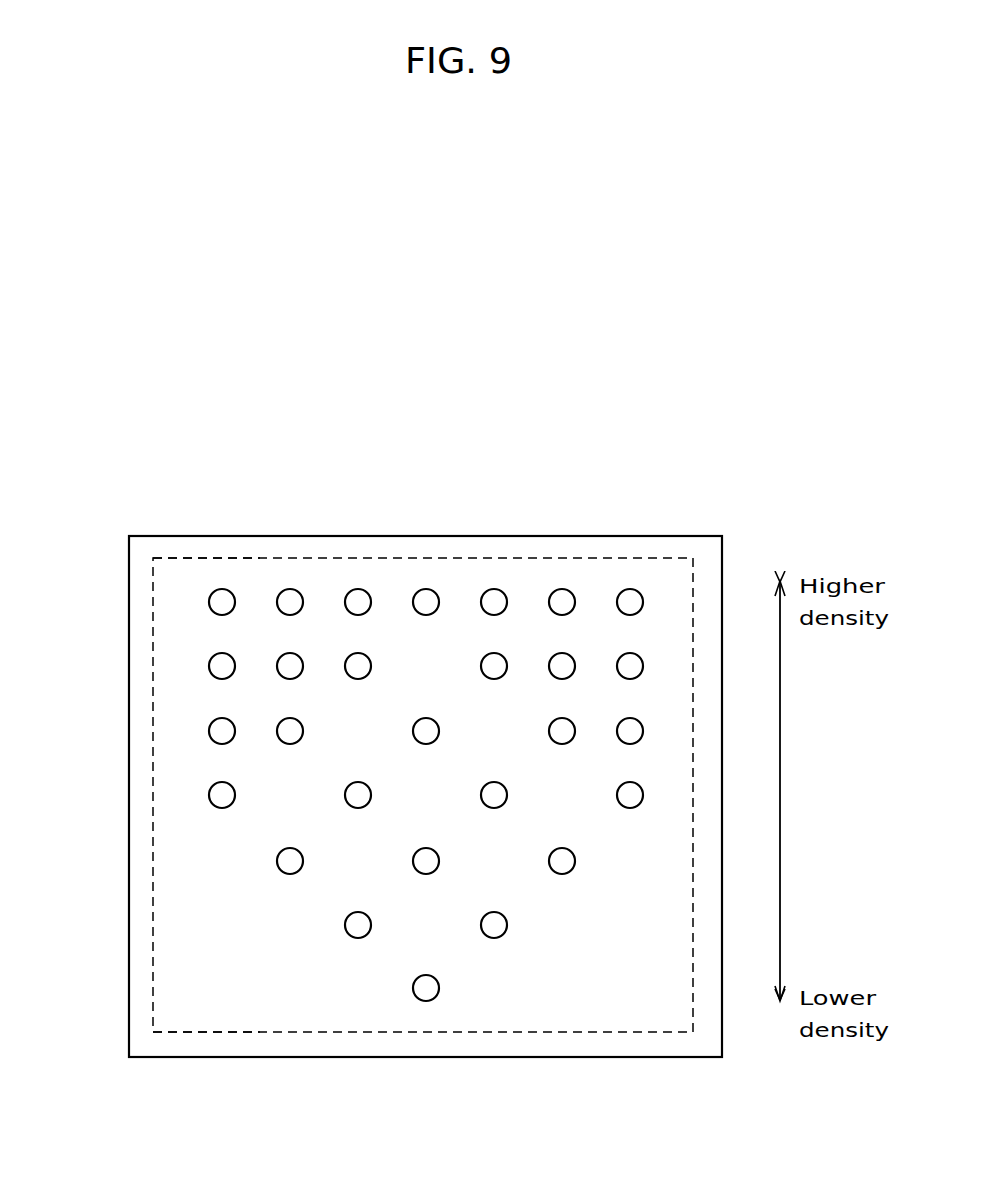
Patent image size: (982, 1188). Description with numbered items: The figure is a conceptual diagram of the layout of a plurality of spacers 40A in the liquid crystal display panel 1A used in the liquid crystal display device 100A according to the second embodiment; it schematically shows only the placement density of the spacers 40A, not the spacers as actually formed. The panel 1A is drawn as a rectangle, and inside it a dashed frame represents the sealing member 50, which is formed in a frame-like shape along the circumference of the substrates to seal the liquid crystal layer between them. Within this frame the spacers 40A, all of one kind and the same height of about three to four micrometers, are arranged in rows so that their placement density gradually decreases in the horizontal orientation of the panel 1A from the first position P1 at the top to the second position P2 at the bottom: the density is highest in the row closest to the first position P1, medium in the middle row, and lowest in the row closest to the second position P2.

The liquid crystal display device 100A is at (758, 503).
The liquid crystal display panel 1A is at (189, 520).
The sealing member 50 is at (373, 550).
The spacers 40A is at (215, 666).
The first position P1 is at (150, 558).
The second position P2 is at (150, 1032).